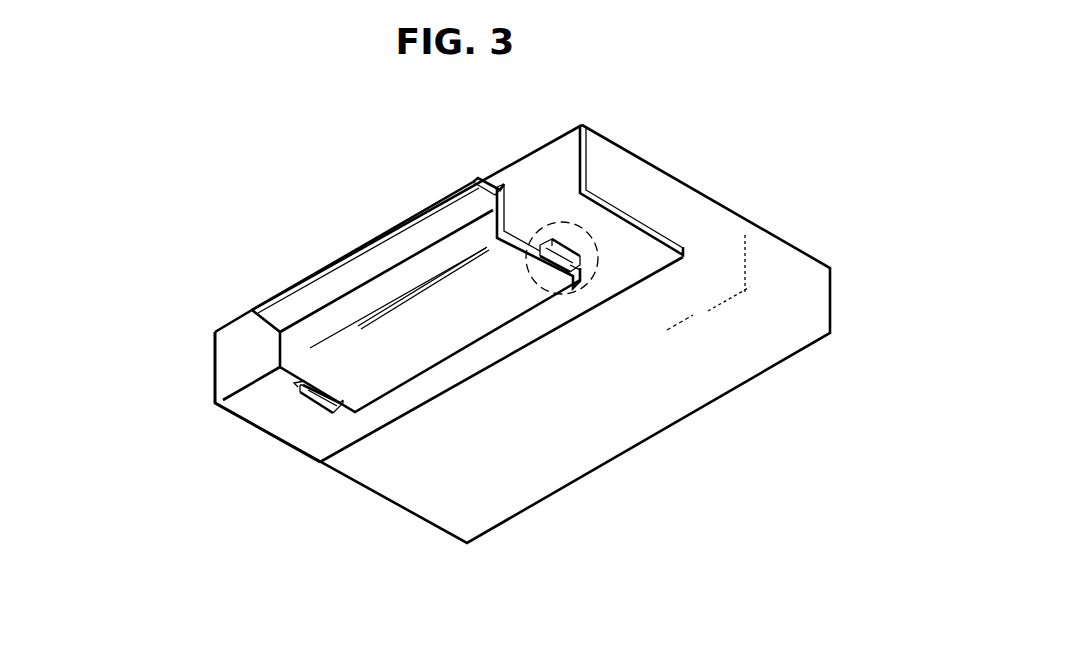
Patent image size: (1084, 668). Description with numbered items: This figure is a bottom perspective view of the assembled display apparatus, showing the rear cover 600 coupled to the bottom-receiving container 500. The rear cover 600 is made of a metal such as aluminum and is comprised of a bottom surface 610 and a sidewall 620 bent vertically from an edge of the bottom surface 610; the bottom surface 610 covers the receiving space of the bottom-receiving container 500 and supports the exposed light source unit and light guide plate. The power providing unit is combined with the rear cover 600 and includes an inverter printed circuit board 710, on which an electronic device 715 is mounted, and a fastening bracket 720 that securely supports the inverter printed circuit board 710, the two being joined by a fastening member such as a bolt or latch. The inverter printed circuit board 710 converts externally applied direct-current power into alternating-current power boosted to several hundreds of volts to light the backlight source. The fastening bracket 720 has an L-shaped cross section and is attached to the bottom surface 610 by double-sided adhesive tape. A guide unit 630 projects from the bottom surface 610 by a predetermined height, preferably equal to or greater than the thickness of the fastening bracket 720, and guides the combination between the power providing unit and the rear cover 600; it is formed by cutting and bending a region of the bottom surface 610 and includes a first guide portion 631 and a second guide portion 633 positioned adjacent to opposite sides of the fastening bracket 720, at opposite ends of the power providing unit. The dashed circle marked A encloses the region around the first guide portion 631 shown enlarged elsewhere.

The bottom-receiving container 500 is at (756, 356).
The rear cover 600 is at (324, 354).
The bottom surface 610 is at (255, 417).
The sidewall 620 is at (228, 377).
The guide unit 630 is at (475, 413).
The first guide portion 631 is at (585, 258).
The second guide portion 633 is at (338, 418).
The inverter printed circuit board 710 is at (433, 223).
The electronic device 715 is at (484, 180).
The fastening bracket 720 is at (505, 250).
The detail region A is at (575, 227).